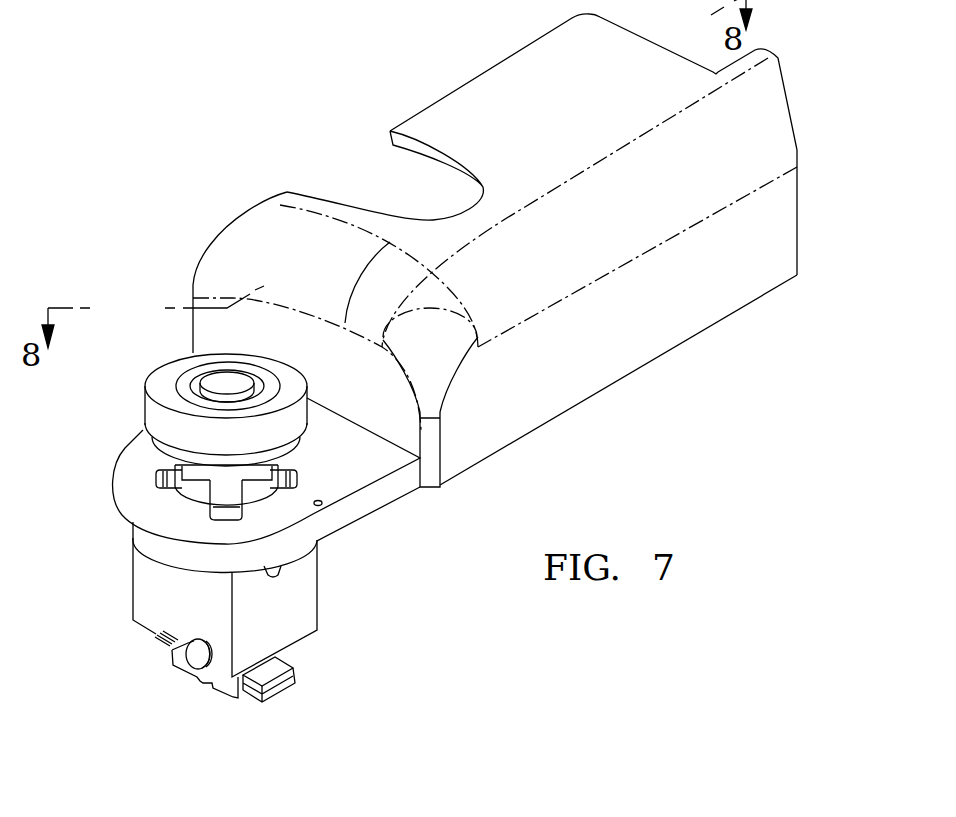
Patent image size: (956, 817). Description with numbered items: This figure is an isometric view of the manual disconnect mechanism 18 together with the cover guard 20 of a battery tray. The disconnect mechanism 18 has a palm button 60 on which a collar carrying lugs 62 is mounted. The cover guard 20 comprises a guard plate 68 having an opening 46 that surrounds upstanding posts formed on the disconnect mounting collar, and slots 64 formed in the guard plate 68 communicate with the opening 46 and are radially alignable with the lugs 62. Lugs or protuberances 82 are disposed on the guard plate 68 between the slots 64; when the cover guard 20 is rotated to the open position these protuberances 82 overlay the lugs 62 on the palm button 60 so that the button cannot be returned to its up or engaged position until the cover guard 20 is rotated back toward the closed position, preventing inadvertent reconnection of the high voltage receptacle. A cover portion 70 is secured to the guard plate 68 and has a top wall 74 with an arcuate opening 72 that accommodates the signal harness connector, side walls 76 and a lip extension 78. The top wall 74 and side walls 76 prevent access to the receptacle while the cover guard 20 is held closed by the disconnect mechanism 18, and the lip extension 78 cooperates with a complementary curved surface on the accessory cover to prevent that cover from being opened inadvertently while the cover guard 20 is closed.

The manual disconnect mechanism 18 is at (154, 407).
The cover guard 20 is at (656, 347).
The opening 46 is at (267, 488).
The palm button 60 is at (207, 272).
The lugs 62 is at (183, 468).
The slots 64 is at (165, 485).
The guard plate 68 is at (332, 523).
The cover portion 70 is at (563, 413).
The arcuate opening 72 is at (428, 157).
The top wall 74 is at (443, 110).
The side walls 76 is at (723, 307).
The lip extension 78 is at (760, 58).
The lugs or protuberances 82 is at (211, 481).